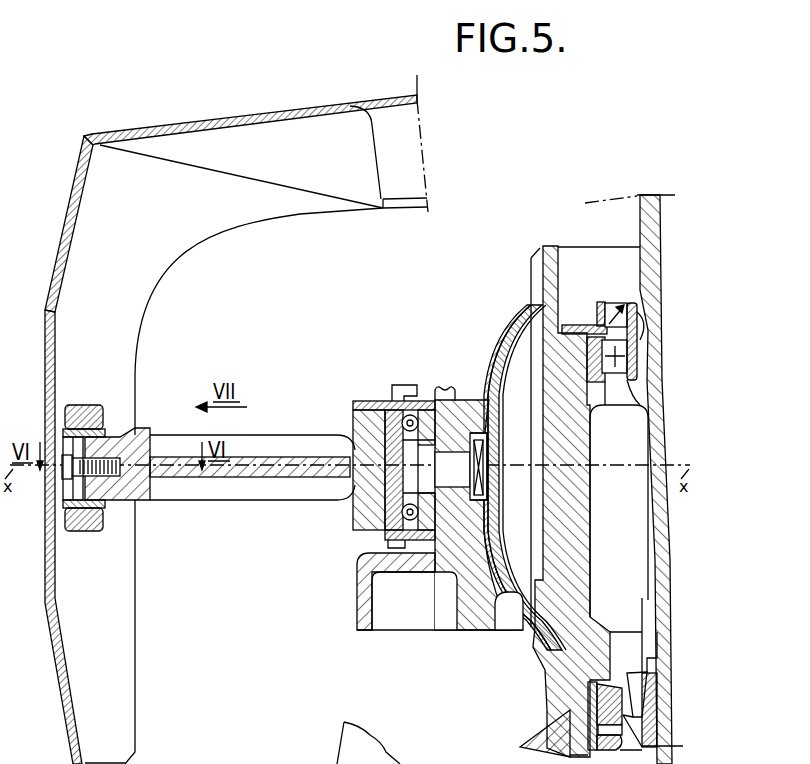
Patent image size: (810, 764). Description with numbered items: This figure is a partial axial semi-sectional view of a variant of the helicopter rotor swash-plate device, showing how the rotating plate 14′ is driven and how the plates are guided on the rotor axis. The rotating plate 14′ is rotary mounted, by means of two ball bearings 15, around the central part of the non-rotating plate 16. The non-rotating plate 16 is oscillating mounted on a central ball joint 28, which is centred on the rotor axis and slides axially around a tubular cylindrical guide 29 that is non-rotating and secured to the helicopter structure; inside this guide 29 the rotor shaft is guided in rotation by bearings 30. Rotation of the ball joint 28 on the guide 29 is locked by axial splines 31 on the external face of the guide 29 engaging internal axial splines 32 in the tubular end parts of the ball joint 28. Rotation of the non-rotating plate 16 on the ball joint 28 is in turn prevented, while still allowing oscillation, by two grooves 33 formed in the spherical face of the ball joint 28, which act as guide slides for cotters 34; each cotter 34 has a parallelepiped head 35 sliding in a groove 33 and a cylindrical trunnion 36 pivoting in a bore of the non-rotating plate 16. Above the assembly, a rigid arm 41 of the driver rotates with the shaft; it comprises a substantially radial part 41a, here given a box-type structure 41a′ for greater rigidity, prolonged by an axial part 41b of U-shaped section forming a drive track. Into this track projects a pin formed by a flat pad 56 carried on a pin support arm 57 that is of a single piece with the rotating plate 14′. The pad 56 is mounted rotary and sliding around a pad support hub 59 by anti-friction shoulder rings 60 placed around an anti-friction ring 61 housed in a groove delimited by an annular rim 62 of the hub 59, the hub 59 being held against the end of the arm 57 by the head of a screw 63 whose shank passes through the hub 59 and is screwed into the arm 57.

The rotating plate 14′ is at (357, 763).
The ball bearings 15 is at (353, 453).
The non-rotating plate 16 is at (456, 550).
The central ball joint 28 is at (503, 385).
The tubular cylindrical guide 29 is at (563, 692).
The bearings 30 is at (588, 688).
The axial splines 31 is at (540, 655).
The internal axial splines 32 is at (517, 628).
The grooves 33 is at (508, 348).
The cotters 34 is at (492, 490).
The head 35 is at (490, 443).
The trunnion 36 is at (457, 482).
The rigid arms 41 is at (78, 153).
The radial part 41a is at (257, 110).
The box-type structure 41a′ is at (395, 208).
The axial part 41b is at (47, 357).
The pad 56 is at (103, 410).
The pin support arm 57 is at (243, 477).
The pad support hub 59 is at (103, 447).
The anti-friction shoulder rings 60 is at (70, 434).
The anti-friction ring 61 is at (105, 505).
The annular rim 62 is at (67, 503).
The screw 63 is at (117, 477).